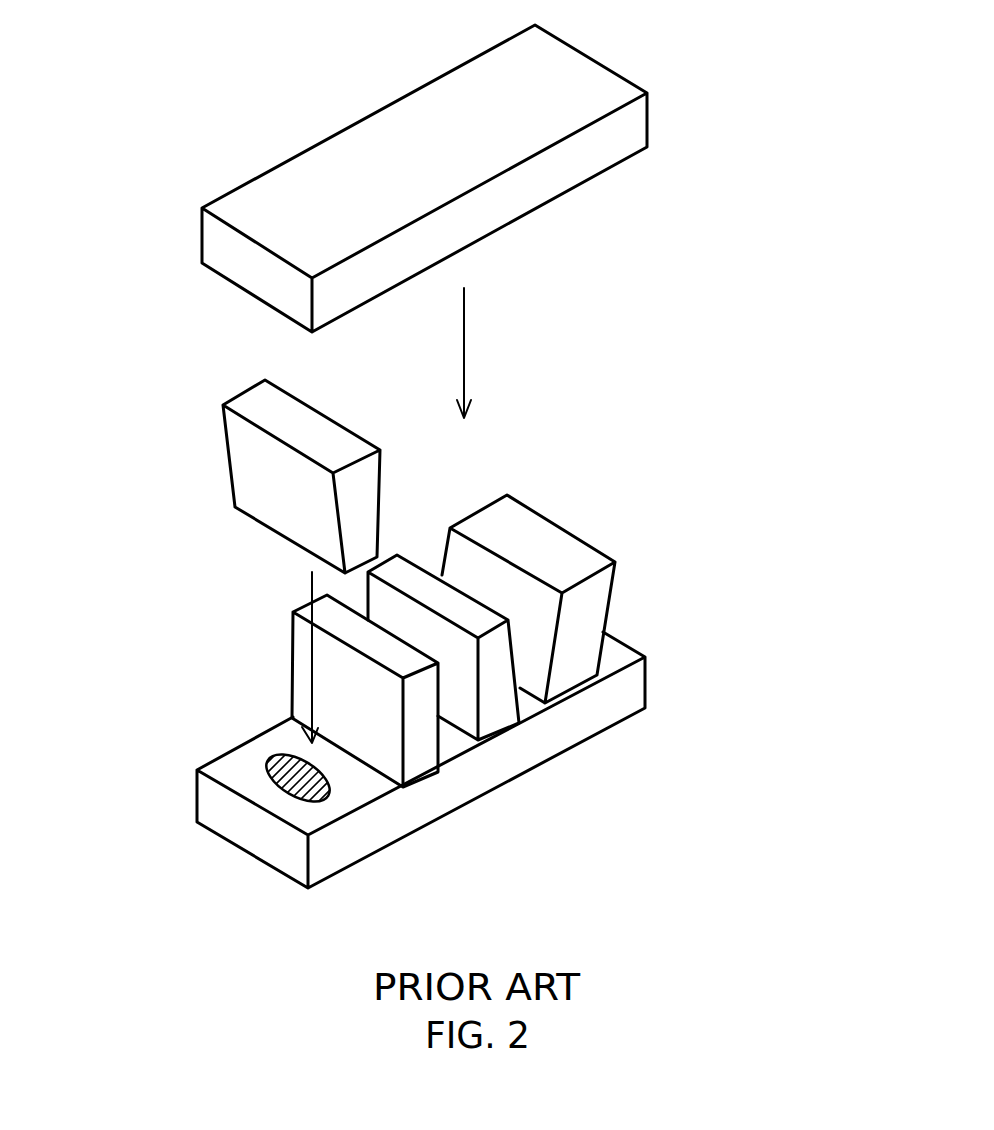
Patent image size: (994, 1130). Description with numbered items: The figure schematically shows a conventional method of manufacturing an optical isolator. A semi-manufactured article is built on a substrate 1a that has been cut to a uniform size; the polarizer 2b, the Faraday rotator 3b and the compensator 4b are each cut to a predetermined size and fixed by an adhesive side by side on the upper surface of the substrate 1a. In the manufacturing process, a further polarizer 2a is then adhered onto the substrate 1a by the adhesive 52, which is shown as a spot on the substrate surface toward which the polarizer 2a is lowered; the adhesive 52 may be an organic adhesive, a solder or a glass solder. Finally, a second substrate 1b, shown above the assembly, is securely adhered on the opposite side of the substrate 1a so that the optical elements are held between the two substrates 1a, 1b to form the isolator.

The substrate 1a is at (623, 693).
The substrate 1b is at (632, 133).
The polarizer 2a is at (255, 462).
The polarizer 2b is at (504, 719).
The Faraday rotator 3b is at (416, 768).
The compensator 4b is at (556, 550).
The adhesive 52 is at (275, 760).